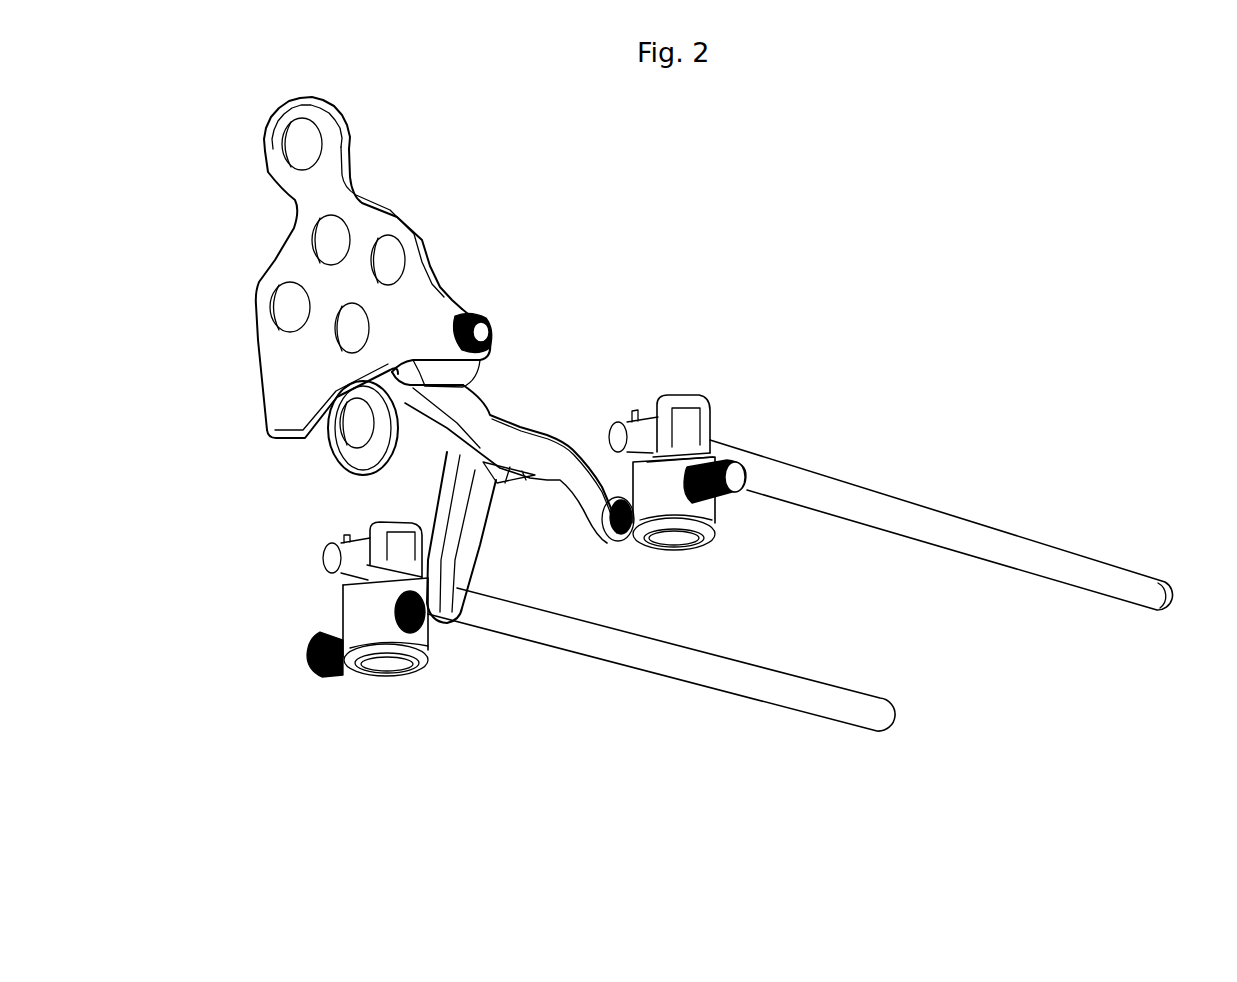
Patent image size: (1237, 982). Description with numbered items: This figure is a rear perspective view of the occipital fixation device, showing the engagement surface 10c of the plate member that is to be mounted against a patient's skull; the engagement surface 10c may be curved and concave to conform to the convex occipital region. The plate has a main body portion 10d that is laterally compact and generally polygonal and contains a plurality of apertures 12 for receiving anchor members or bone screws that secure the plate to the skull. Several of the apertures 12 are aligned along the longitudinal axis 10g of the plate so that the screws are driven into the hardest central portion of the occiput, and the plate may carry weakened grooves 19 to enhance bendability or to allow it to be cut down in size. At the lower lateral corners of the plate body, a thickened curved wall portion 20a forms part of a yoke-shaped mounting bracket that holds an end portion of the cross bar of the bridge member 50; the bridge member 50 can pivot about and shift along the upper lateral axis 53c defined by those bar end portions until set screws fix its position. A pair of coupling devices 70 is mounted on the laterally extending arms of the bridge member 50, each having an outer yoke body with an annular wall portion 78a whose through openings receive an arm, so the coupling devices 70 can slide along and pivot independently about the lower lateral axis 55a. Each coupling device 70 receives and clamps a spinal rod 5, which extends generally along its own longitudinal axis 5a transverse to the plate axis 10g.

The longitudinal axis 10g is at (280, 43).
The main body portion 10d is at (370, 288).
The engagement surface 10c is at (365, 401).
The curved wall portion 20a is at (463, 309).
The lateral axis 53c is at (487, 328).
The apertures 12 is at (300, 134).
The grooves 19 is at (337, 400).
The bridge member 50 is at (540, 423).
The annular wall portion 78a is at (650, 487).
The coupling device 70 is at (720, 530).
The lower lateral axis 55a is at (313, 667).
The spinal rod 5 is at (933, 533).
The longitudinal axis 5a is at (1232, 616).